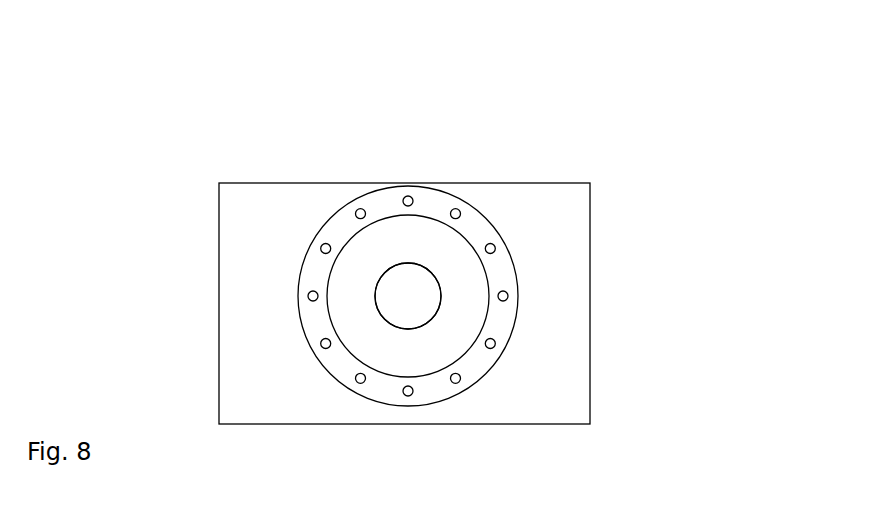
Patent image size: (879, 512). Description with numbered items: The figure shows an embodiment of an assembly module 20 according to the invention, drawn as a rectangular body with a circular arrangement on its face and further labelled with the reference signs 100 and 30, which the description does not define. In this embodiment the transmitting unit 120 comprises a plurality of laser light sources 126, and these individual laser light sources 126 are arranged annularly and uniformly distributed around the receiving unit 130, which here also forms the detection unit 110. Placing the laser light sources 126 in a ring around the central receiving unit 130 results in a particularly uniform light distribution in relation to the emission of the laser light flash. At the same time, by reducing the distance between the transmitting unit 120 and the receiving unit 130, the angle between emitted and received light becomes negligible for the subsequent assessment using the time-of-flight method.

The base plate 100 is at (248, 183).
The assembly module 20 is at (278, 157).
The assembly 30 is at (571, 83).
The transmitting unit 120 is at (510, 277).
The laser light sources 126 is at (455, 382).
The detection unit 110 is at (412, 273).
The receiving unit 130 is at (427, 283).